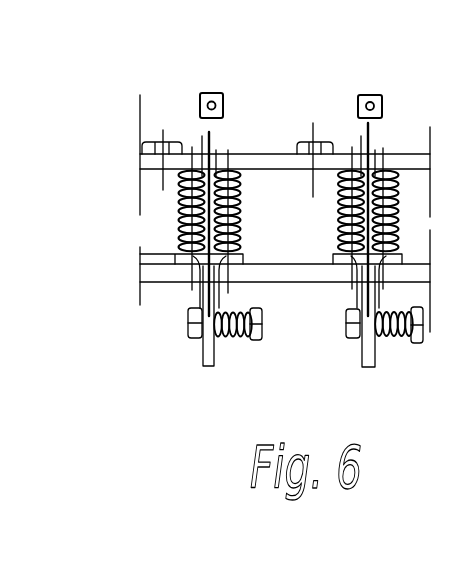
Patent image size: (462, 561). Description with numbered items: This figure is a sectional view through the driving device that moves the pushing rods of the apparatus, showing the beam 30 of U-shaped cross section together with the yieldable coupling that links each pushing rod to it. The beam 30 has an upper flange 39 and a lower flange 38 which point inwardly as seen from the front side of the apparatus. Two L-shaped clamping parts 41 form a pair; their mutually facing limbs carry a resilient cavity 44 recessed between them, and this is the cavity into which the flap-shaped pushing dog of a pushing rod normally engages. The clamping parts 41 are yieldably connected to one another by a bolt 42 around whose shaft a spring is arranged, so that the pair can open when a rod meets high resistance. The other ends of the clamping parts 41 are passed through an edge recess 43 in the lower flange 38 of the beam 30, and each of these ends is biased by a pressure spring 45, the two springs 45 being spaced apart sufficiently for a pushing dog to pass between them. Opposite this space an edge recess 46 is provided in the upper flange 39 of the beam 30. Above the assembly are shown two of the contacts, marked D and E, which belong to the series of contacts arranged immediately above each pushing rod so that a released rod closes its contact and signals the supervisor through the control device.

The beam 30 is at (406, 154).
The lower flange 38 is at (277, 272).
The upper flange 39 is at (257, 157).
The L-shaped clamping part 41 is at (202, 359).
The bolt 42 is at (263, 328).
The edge recess 43 is at (150, 281).
The resilient cavity 44 is at (190, 302).
The pressure spring 45 is at (196, 221).
The edge recess 46 is at (213, 153).
The contact E is at (213, 93).
The contact D is at (383, 93).